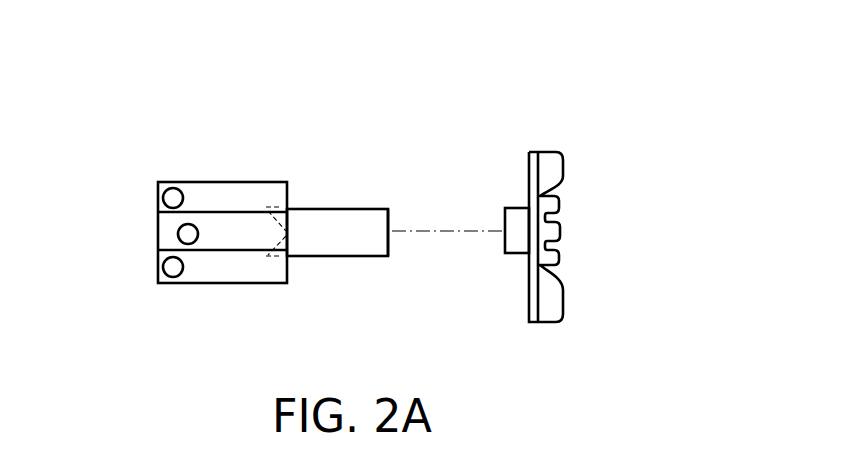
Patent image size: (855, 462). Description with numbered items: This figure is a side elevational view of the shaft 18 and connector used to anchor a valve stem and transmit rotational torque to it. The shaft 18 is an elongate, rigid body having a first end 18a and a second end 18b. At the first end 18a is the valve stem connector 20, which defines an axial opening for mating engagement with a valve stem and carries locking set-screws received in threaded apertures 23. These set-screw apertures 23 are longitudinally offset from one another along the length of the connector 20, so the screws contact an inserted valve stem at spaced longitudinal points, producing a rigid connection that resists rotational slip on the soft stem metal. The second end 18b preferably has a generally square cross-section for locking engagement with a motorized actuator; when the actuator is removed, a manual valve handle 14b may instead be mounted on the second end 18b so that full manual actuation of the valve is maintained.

The valve stem connector 20 is at (232, 171).
The threaded apertures 23 is at (123, 226).
The shaft 18 is at (328, 209).
The first end 18a is at (284, 236).
The second end 18b is at (390, 216).
The manual valve handle 14b is at (594, 237).